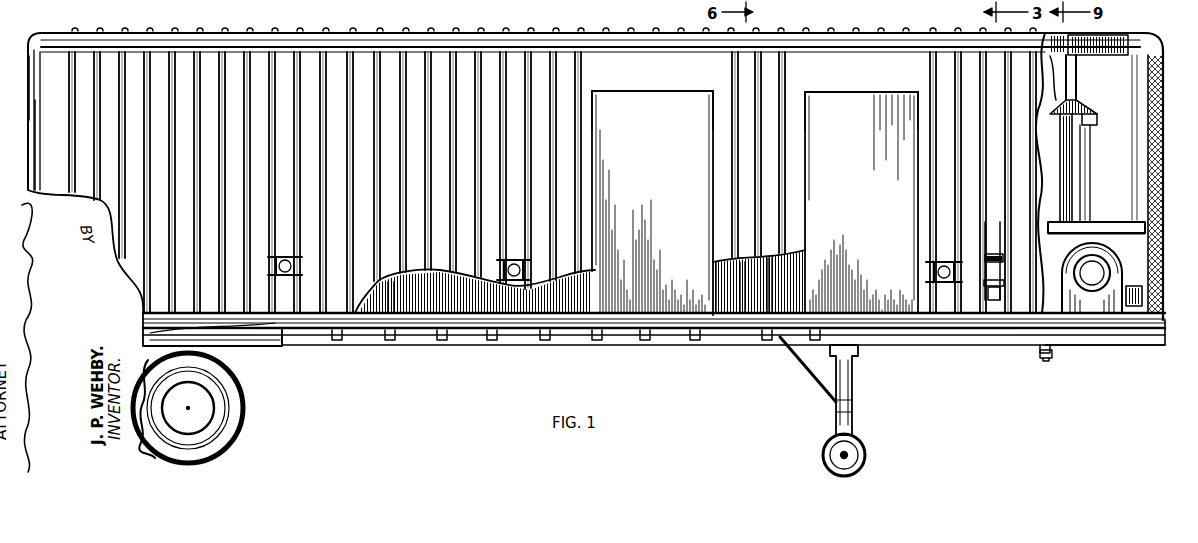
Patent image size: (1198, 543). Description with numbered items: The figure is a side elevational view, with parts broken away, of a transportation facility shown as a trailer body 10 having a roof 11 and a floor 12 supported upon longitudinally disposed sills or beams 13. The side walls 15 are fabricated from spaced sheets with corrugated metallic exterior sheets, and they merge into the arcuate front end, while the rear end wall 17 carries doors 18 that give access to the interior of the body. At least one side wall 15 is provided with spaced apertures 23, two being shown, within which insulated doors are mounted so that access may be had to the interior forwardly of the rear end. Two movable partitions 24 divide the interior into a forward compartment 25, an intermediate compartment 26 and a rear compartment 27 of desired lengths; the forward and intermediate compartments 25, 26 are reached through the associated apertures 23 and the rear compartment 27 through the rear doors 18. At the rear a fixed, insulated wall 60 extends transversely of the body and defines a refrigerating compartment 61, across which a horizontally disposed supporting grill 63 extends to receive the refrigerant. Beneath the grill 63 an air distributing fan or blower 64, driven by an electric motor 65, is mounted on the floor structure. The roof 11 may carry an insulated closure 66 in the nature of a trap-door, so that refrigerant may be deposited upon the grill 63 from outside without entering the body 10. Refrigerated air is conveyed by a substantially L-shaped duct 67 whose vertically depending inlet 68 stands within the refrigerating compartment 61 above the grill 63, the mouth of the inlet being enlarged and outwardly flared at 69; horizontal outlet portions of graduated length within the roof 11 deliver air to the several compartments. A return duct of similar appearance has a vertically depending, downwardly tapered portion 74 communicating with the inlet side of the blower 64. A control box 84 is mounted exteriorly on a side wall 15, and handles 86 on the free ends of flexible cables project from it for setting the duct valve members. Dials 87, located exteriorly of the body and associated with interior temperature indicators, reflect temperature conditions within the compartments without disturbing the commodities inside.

The trailer body 10 is at (313, 30).
The roof 11 is at (188, 0).
The floor 12 is at (420, 330).
The sills or beams 13 is at (312, 330).
The side walls 15 is at (140, 278).
The rear end wall 17 is at (30, 74).
The doors 18 is at (26, 116).
The apertures 23 is at (645, 90).
The movable partitions 24 is at (404, 298).
The forward compartment 25 is at (873, 189).
The intermediate compartment 26 is at (661, 191).
The rear compartment 27 is at (386, 305).
The fixed insulated wall 60 is at (1052, 148).
The refrigerating compartment 61 is at (1127, 170).
The supporting grill 63 is at (1118, 232).
The fan or blower 64 is at (1132, 285).
The electric motor 65 is at (1086, 246).
The insulated closure 66 is at (1118, 34).
The L-shaped duct 67 is at (1082, 71).
The duct inlet 68 is at (1078, 100).
The flared mouth 69 is at (1094, 114).
The downwardly tapered portion 74 is at (1072, 198).
The control box 84 is at (996, 254).
The operative handles 86 is at (994, 300).
The dials 87 is at (300, 265).